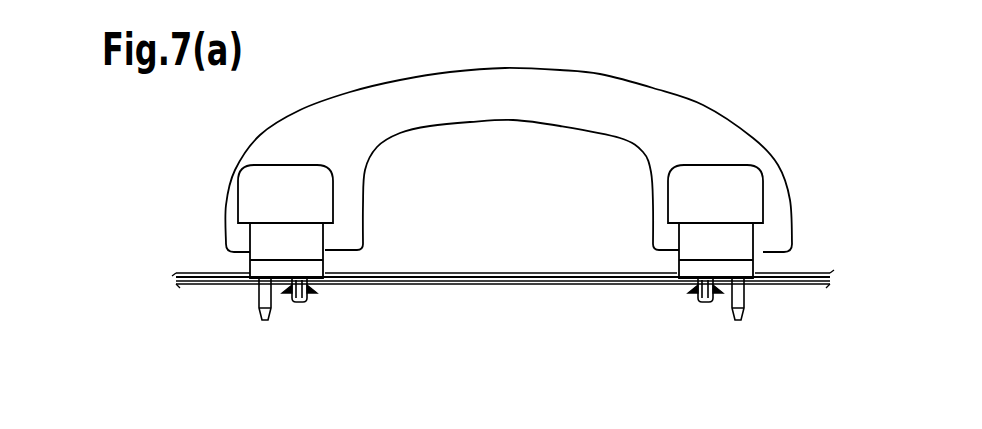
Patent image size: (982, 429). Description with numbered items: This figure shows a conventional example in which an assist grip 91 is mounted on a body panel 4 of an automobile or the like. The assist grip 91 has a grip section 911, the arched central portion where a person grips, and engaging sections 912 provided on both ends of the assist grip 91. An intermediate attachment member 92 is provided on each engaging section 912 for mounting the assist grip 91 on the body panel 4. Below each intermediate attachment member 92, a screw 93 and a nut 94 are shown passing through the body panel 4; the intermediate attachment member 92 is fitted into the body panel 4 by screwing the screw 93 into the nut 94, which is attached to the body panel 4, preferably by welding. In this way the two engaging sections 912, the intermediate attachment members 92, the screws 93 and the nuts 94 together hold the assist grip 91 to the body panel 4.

The assist grip 91 is at (600, 68).
The grip section 911 is at (447, 105).
The engaging section 912 is at (263, 193).
The intermediate attachment member 92 is at (263, 243).
The screw 93 is at (297, 302).
The nut 94 is at (312, 288).
The body panel 4 is at (505, 287).